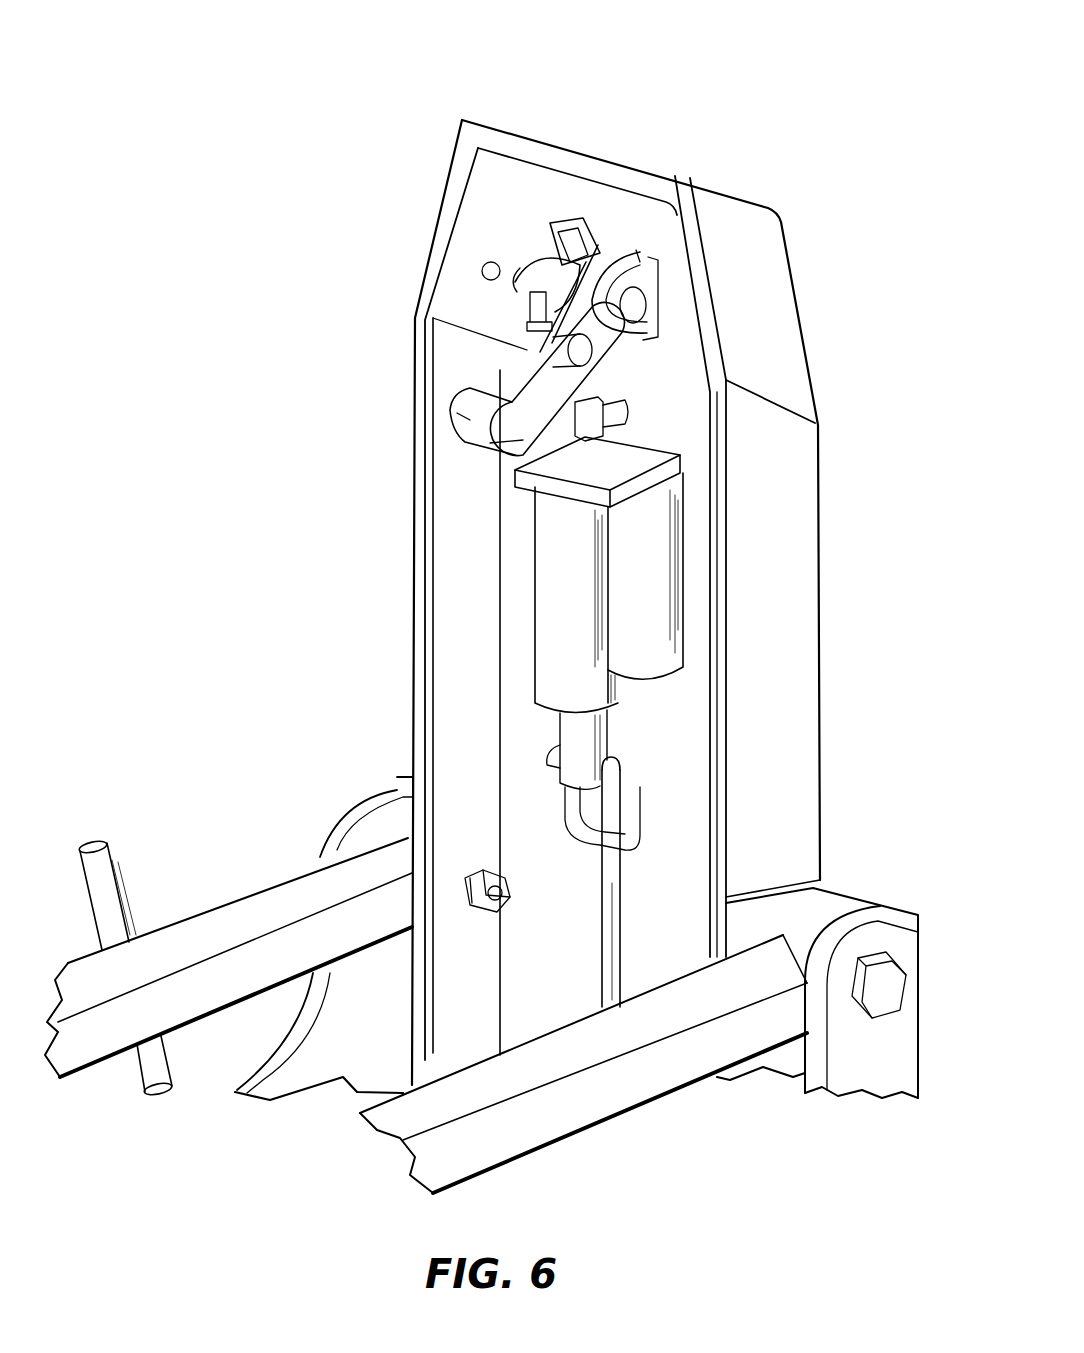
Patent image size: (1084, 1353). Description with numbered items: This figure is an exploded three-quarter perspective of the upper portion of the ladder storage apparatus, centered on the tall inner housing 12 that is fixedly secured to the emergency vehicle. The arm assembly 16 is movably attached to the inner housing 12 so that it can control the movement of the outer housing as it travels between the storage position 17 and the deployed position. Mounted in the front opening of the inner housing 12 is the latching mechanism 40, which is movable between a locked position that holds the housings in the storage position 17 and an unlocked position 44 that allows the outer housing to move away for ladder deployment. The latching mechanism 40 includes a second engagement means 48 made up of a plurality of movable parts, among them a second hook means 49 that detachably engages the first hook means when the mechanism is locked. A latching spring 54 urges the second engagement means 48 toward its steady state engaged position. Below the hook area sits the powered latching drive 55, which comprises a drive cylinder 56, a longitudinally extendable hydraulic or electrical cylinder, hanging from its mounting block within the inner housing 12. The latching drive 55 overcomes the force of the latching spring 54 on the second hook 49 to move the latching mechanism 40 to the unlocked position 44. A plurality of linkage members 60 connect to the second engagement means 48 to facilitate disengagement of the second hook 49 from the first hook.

The inner housing 12 is at (770, 258).
The arm assembly 16 is at (220, 913).
The storage position 17 is at (680, 112).
The latching mechanism 40 is at (517, 387).
The unlocked position 44 is at (465, 398).
The second engagement means 48 is at (517, 442).
The second hook means 49 is at (458, 415).
The latching spring 54 is at (523, 262).
The latching drive 55 is at (655, 452).
The drive cylinder 56 is at (550, 565).
The linkage members 60 is at (617, 800).